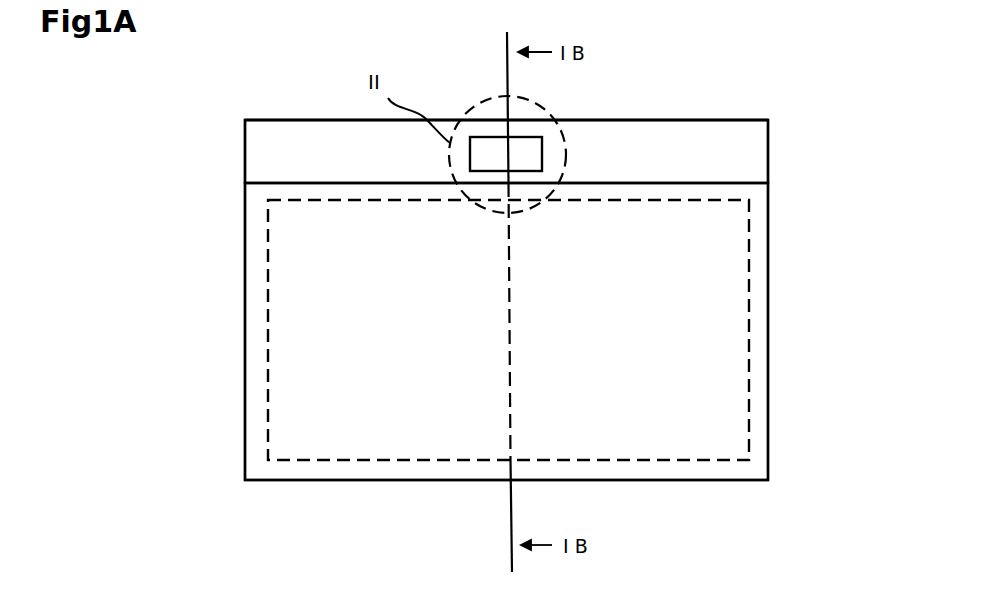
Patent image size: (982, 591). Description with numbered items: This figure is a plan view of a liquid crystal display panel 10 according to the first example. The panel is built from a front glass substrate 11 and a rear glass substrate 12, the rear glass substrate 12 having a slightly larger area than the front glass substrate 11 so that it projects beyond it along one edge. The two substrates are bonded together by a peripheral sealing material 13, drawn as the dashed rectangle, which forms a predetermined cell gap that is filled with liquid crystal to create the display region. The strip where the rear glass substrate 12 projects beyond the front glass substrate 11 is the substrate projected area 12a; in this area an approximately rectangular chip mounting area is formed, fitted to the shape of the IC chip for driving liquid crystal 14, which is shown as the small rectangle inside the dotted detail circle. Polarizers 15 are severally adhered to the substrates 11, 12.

The liquid crystal display panel 10 is at (779, 118).
The front glass substrate 11 is at (246, 427).
The rear glass substrate 12 is at (244, 163).
The substrate projected area 12a is at (697, 137).
The peripheral sealing material 13 is at (757, 378).
The IC chip for driving liquid crystal 14 is at (490, 140).
The polarizer 15 is at (662, 436).